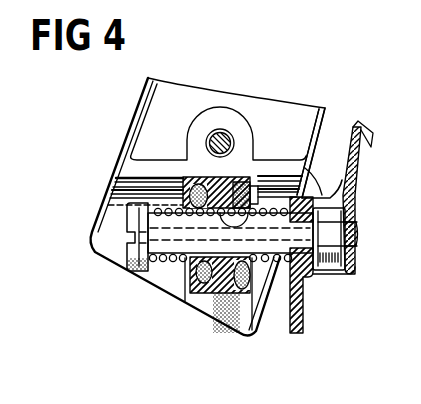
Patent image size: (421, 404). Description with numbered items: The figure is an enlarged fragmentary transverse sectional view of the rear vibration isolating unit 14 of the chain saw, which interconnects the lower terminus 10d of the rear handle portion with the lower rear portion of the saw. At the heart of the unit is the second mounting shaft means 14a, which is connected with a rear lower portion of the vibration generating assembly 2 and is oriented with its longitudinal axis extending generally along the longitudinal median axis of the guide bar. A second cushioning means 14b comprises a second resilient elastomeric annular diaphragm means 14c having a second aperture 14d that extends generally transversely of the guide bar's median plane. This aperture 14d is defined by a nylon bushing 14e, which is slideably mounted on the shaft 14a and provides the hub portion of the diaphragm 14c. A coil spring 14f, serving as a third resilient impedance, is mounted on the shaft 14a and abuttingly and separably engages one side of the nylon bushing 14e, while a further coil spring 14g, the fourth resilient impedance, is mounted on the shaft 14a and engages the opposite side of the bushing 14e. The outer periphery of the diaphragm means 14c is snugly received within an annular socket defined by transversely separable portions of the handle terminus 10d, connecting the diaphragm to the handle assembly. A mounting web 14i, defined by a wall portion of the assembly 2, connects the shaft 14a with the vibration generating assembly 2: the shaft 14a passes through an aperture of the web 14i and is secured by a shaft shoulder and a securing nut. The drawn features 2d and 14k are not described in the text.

The vibration generating assembly 2 is at (364, 131).
The bracket flange 2d is at (327, 274).
The lower terminus of rear handle portion 10d is at (128, 131).
The rear vibration isolating unit 14 is at (319, 68).
The second mounting shaft means 14a is at (130, 245).
The second cushioning means 14b is at (180, 277).
The second resilient elastomeric annular diaphragm means 14c is at (222, 185).
The second aperture 14d is at (262, 178).
The nylon bushing 14e is at (185, 191).
The coil spring 14f is at (254, 334).
The coil spring 14g is at (160, 263).
The mounting web 14i is at (319, 153).
The bore 14k is at (213, 303).